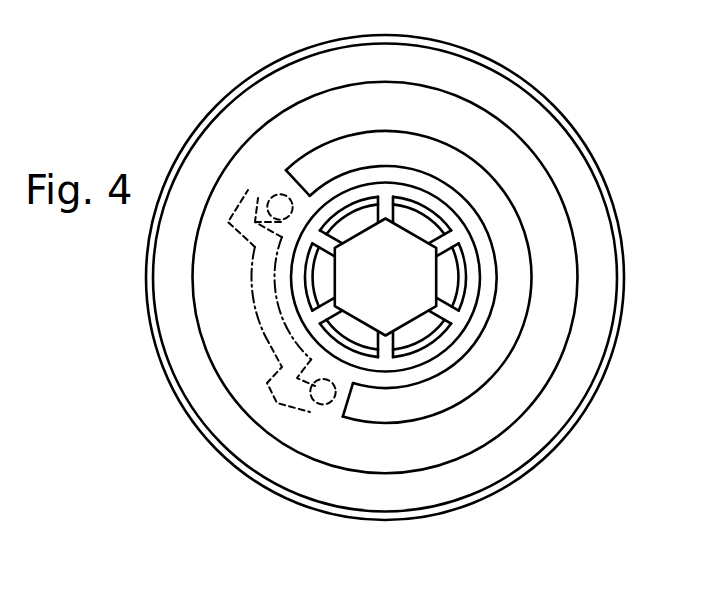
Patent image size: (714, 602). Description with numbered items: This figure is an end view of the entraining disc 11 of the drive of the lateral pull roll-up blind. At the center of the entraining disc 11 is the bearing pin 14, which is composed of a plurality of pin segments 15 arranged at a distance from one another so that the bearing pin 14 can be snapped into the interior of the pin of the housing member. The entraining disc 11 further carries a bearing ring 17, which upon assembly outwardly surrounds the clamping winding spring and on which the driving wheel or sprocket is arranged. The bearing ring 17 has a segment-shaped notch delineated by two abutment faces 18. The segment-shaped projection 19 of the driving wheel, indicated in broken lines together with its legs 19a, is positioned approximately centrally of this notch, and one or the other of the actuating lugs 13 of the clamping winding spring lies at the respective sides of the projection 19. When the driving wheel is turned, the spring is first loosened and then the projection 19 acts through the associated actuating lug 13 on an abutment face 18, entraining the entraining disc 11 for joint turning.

The entraining disc 11 is at (552, 132).
The actuating lugs 13 is at (268, 199).
The bearing pin 14 is at (337, 205).
The pin segments 15 is at (432, 227).
The bearing ring 17 is at (432, 152).
The abutment faces 18 is at (286, 181).
The projection 19 is at (253, 317).
The spring clip legs 19a is at (230, 222).